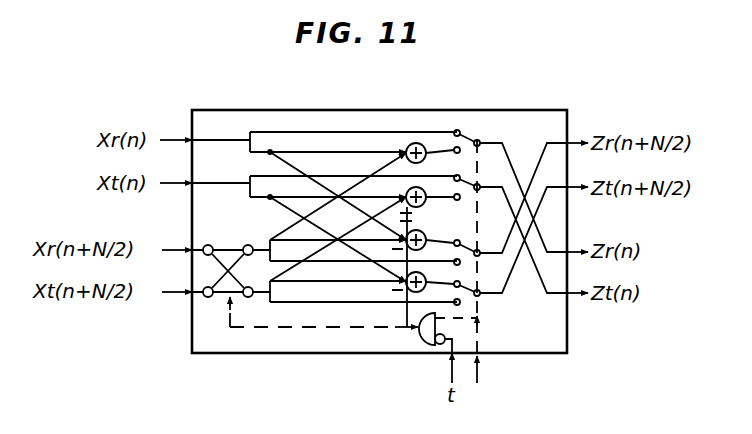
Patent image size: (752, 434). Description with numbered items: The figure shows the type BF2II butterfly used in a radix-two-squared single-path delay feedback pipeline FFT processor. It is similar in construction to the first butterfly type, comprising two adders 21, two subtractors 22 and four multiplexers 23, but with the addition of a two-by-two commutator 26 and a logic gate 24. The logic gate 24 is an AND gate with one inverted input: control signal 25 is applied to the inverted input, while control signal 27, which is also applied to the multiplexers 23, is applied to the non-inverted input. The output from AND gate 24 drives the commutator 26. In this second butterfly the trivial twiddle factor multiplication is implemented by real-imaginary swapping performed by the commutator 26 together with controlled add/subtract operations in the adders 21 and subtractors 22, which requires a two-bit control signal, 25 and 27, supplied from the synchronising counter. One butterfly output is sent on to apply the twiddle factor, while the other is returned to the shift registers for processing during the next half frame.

The adder 21 is at (406, 230).
The subtractor 22 is at (398, 298).
The multiplexer 23 is at (481, 184).
The logic gate 24 is at (430, 343).
The control signal 25 is at (449, 365).
The 2×2 commutator 26 is at (203, 287).
The control signal 27 is at (482, 366).